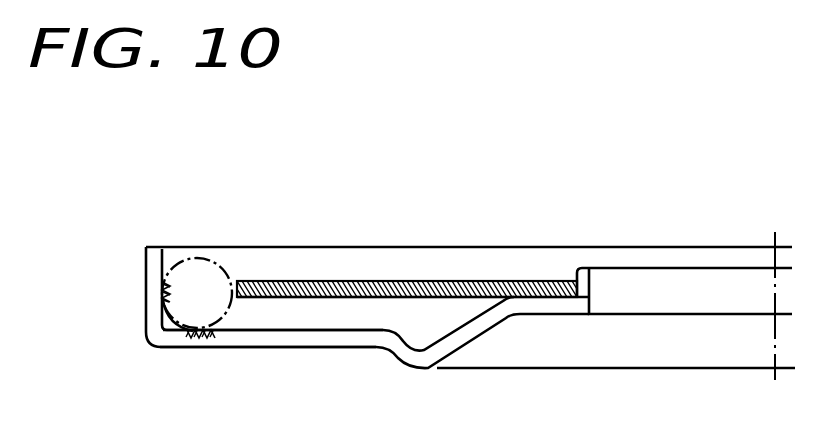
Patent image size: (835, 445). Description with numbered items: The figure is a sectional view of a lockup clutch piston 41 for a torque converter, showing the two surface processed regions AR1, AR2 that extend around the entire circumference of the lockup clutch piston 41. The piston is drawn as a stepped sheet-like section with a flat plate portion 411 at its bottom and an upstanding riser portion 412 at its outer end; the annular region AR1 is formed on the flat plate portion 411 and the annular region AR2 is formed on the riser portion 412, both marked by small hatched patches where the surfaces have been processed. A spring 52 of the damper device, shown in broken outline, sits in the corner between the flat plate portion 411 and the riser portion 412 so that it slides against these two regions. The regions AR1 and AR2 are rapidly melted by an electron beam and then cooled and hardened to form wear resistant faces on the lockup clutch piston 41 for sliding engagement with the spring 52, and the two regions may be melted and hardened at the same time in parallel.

The lockup clutch piston 41 is at (434, 311).
The flat plate portion 411 is at (270, 345).
The riser portion 412 is at (146, 262).
The spring 52 is at (207, 268).
The annular section of the flat portion AR1 is at (200, 339).
The annular section of the riser portion AR2 is at (158, 296).